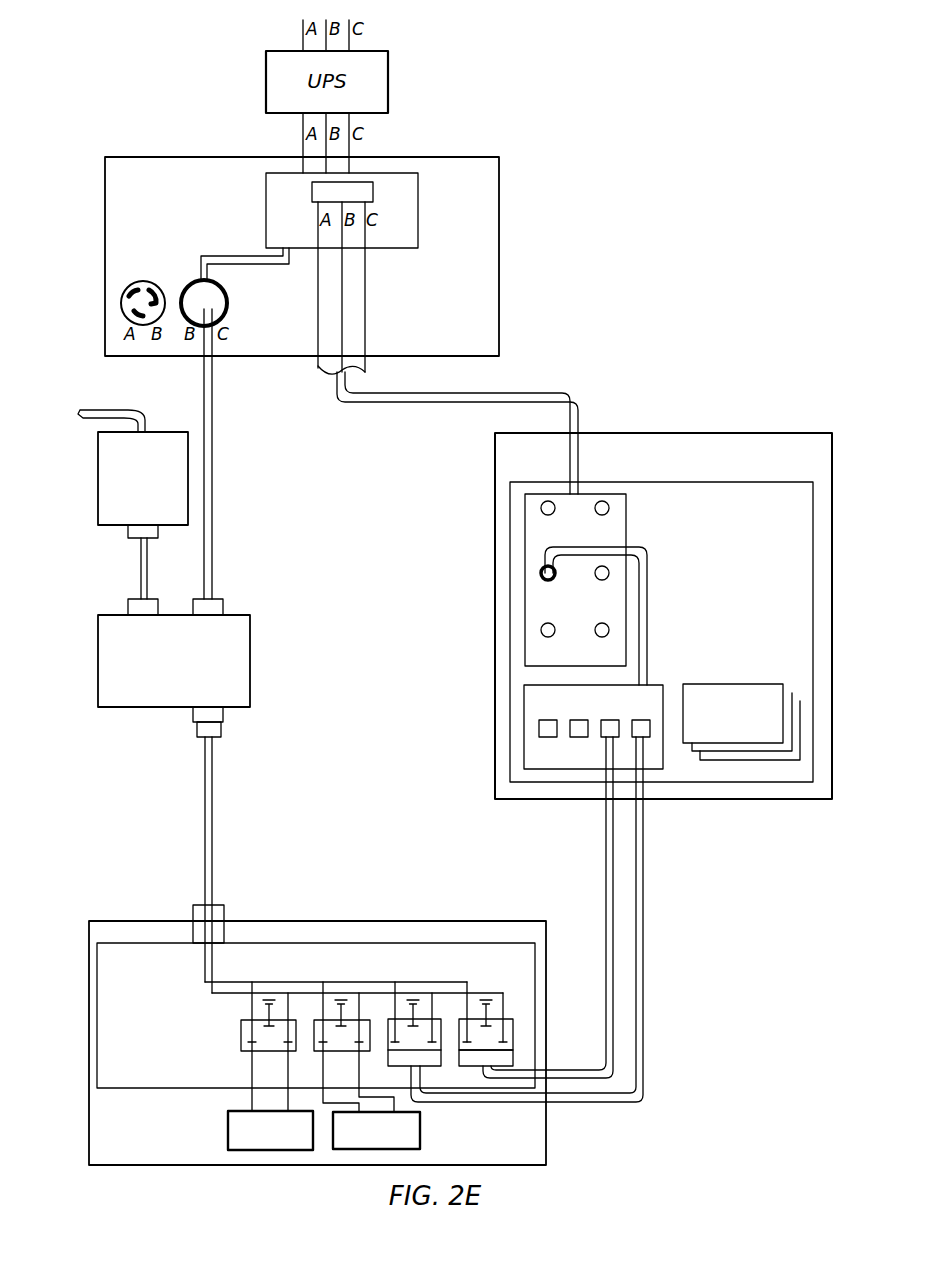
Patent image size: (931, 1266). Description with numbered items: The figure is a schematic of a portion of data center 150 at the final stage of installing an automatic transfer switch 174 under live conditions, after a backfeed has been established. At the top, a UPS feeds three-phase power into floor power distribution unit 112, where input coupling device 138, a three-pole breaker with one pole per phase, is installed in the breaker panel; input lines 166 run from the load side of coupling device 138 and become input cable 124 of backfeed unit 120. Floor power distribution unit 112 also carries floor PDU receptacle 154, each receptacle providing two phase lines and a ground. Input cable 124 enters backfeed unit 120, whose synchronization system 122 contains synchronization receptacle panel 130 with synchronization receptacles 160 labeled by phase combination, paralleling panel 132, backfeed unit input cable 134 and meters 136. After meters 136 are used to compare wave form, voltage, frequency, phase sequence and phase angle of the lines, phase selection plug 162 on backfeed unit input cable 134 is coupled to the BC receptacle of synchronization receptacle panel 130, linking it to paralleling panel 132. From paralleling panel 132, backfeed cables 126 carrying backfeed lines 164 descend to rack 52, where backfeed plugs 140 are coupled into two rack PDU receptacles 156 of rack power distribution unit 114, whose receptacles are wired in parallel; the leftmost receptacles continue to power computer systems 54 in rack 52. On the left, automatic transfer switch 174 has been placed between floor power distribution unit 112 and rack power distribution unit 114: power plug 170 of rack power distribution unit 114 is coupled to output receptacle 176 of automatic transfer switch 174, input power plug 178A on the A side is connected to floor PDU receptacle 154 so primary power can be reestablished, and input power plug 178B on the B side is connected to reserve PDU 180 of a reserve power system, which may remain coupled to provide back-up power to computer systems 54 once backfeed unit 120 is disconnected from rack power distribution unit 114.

The data center 150 is at (186, 57).
The floor power distribution unit 112 is at (302, 256).
The input coupling device 138 is at (373, 192).
The input lines 166 is at (365, 305).
The floor PDU receptacle 154 is at (122, 297).
The input power plug 178A is at (228, 305).
The input cable 124 is at (548, 398).
The backfeed unit 120 is at (663, 616).
The synchronization system 122 is at (661, 632).
The synchronization receptacle panel 130 is at (525, 537).
The synchronization receptacles 160 is at (547, 502).
The phase selection plug 162 is at (540, 574).
The backfeed unit input cable 134 is at (647, 601).
The paralleling panel 132 is at (524, 705).
The meters 136 is at (741, 722).
The backfeed cables 126 is at (608, 863).
The backfeed lines 164 is at (643, 980).
The reserve PDU 180 is at (133, 467).
The input power plug 178B is at (127, 530).
The automatic transfer switch 174 is at (174, 653).
The output receptacle 176 is at (223, 717).
The power plug 170 is at (221, 730).
The rack 52 is at (317, 1043).
The rack power distribution unit 114 is at (316, 1008).
The rack PDU receptacles 156 is at (513, 1031).
The backfeed plugs 140 is at (513, 1058).
The computer systems 54 is at (324, 1130).